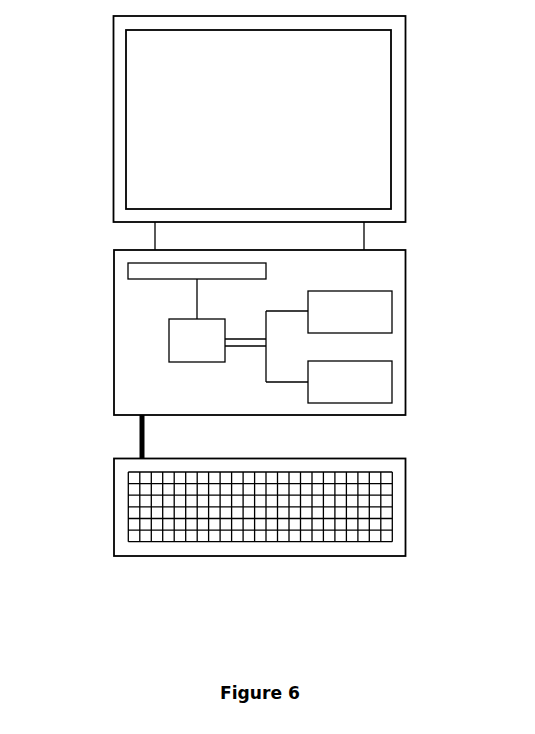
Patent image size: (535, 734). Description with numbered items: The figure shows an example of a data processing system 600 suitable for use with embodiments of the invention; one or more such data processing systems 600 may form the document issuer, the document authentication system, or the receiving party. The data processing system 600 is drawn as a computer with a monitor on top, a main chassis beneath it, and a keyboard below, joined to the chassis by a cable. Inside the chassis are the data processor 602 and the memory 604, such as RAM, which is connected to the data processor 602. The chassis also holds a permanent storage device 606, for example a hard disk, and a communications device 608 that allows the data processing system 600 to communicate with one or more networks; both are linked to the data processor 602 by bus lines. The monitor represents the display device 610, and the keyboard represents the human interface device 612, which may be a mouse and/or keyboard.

The data processing system 600 is at (259, 319).
The data processor 602 is at (169, 340).
The memory 604 is at (128, 271).
The permanent storage device 606 is at (392, 312).
The communications device 608 is at (392, 380).
The display device 610 is at (406, 119).
The human interface device 612 is at (406, 505).